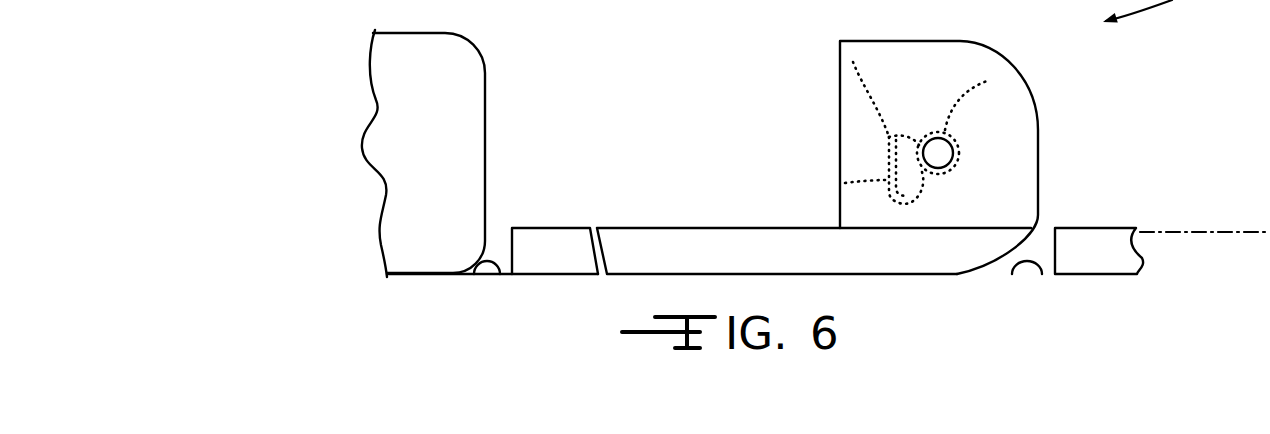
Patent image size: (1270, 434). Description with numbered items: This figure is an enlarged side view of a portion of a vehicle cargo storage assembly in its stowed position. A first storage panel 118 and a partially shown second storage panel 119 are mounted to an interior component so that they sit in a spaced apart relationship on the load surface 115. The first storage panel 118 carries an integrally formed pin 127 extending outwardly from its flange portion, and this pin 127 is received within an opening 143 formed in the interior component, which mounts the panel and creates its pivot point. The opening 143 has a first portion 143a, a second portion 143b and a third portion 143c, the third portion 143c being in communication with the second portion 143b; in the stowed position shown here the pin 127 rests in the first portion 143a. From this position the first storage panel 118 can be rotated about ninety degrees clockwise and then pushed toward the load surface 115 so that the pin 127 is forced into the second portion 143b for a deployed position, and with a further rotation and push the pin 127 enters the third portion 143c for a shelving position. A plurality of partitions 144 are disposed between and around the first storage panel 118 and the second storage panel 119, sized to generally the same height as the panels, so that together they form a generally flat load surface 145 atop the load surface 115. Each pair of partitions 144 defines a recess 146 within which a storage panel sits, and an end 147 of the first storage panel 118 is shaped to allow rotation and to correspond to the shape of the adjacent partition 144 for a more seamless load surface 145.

The load surface 115 is at (477, 268).
The first storage panel 118 is at (990, 32).
The second storage panel 119 is at (505, 91).
The pin 127 is at (938, 153).
The opening 143 is at (888, 172).
The first portion of the opening 143a is at (990, 80).
The second portion of the opening 143b is at (846, 52).
The third portion of the opening 143c is at (840, 184).
The partitions 144 is at (551, 228).
The load surface 145 is at (1210, 234).
The recesses 146 is at (1039, 270).
The end of the first storage panel 147 is at (622, 227).